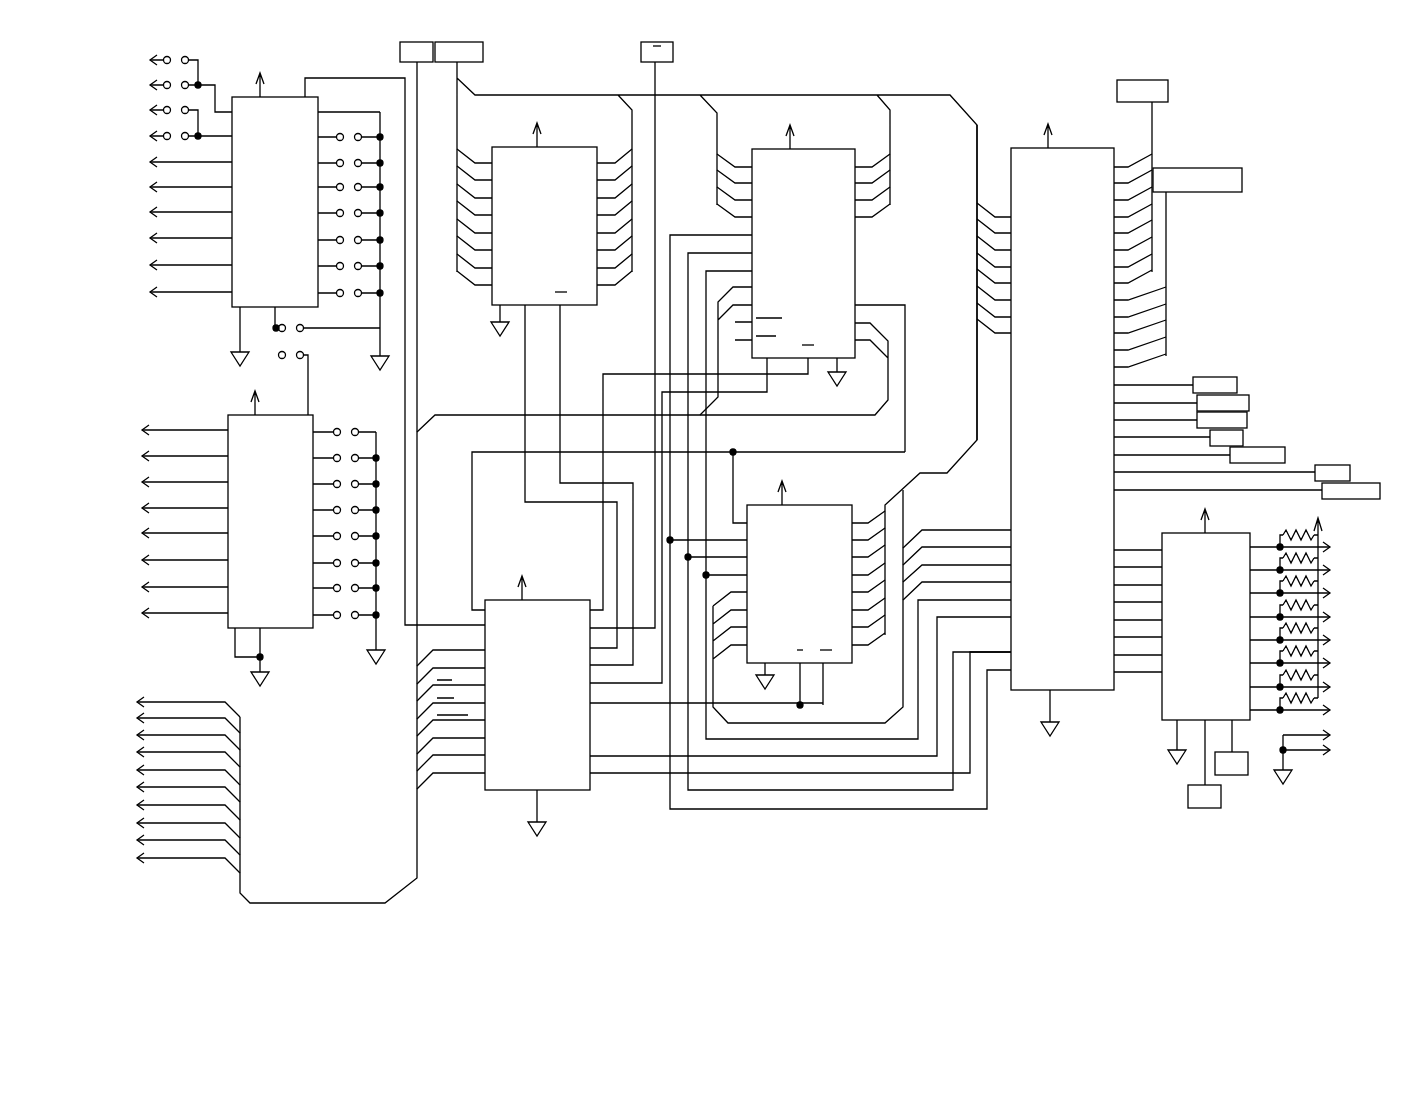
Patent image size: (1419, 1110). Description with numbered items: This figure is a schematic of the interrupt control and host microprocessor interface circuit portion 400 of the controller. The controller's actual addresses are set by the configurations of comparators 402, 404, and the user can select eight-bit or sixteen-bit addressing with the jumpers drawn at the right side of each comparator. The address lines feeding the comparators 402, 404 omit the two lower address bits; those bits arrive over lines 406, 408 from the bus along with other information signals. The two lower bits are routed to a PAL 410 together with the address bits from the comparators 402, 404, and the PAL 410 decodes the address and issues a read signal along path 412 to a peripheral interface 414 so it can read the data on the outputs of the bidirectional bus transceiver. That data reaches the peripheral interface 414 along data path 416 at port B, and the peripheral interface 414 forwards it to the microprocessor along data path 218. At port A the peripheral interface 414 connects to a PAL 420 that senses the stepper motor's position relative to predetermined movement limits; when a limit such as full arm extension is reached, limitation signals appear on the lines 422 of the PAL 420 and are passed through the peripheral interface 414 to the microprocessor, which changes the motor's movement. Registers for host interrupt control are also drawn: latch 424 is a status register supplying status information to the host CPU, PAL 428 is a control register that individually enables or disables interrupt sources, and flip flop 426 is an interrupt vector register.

The circuit portion 400 is at (1158, 842).
The comparator 402 is at (278, 97).
The comparator 404 is at (232, 414).
The line 406 is at (207, 702).
The line 408 is at (240, 722).
The PAL 410 is at (498, 790).
The path 412 is at (626, 774).
The peripheral interface 414 is at (1092, 148).
The data path 416 is at (964, 110).
The PAL 420 is at (1162, 706).
The lines 422 is at (1270, 722).
The latch 424 is at (828, 505).
The flip flop 426 is at (583, 147).
The PAL 428 is at (848, 149).
The data path 218 is at (1152, 148).